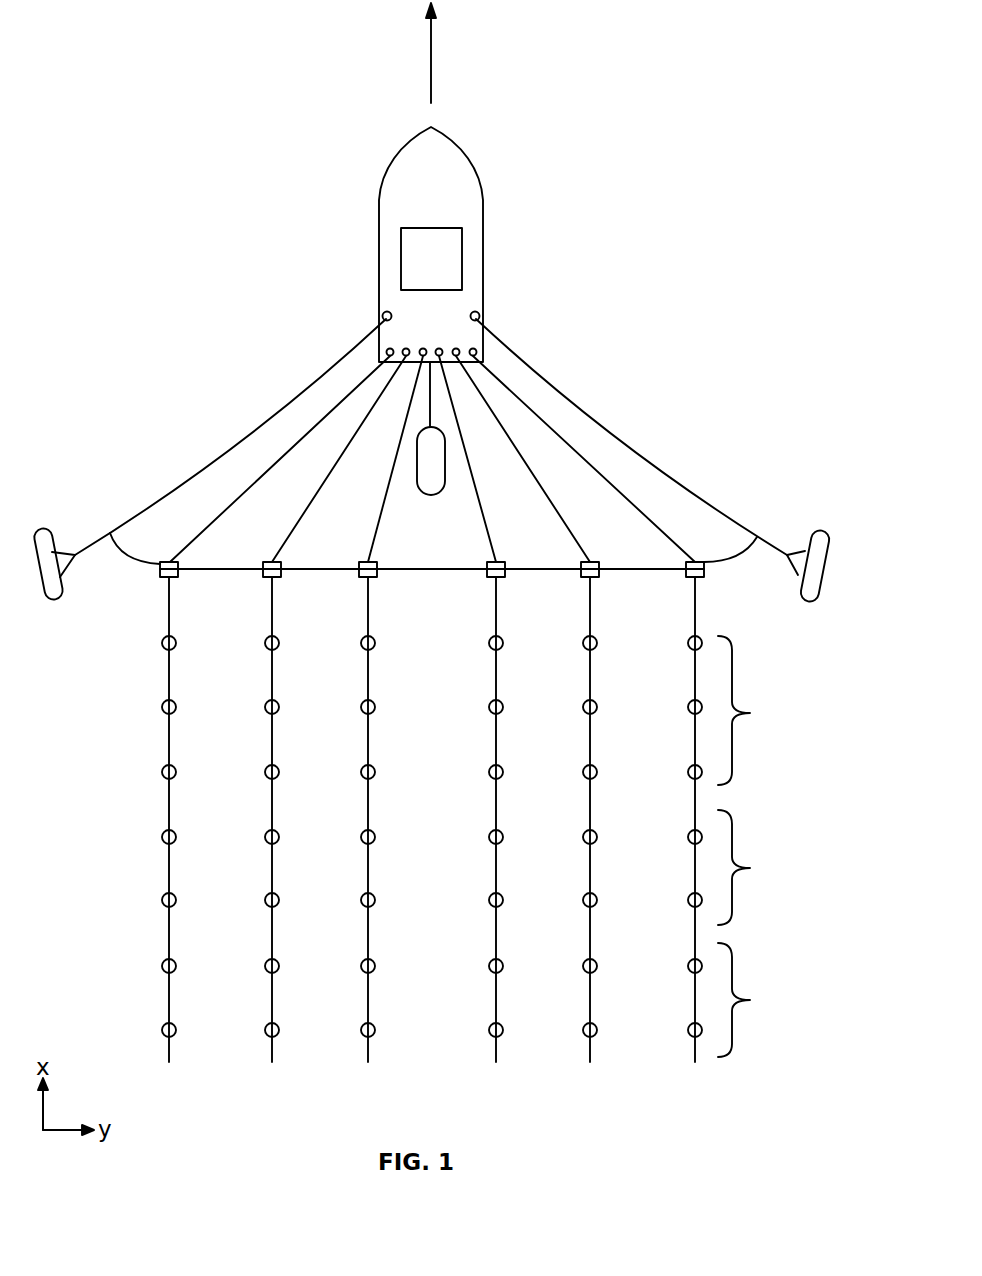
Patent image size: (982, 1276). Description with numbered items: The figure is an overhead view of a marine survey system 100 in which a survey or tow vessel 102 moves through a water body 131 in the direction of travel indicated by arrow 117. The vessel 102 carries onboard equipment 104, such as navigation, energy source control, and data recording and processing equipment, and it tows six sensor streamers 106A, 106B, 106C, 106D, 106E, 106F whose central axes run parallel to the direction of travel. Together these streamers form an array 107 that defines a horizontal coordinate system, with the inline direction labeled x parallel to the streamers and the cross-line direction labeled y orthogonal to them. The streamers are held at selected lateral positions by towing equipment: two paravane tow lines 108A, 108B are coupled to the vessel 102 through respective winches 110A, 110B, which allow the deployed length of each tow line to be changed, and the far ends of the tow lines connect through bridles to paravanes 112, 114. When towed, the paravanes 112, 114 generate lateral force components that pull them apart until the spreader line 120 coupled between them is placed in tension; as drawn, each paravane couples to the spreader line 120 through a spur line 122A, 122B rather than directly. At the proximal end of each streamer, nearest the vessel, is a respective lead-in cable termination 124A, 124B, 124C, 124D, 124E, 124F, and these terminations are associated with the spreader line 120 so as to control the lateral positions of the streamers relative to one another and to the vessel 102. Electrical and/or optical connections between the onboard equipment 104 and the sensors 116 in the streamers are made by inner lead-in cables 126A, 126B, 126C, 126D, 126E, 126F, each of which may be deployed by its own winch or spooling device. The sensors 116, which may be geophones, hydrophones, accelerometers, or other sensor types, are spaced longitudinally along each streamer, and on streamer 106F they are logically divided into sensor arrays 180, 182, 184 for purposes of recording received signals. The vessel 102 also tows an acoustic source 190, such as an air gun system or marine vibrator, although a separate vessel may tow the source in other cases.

The marine survey system 100 is at (139, 34).
The tow vessel 102 is at (379, 212).
The onboard equipment 104 is at (462, 240).
The sensor streamer 106A is at (168, 1047).
The sensor streamer 106B is at (271, 1047).
The sensor streamer 106C is at (367, 1047).
The sensor streamer 106D is at (495, 1047).
The sensor streamer 106E is at (589, 1047).
The sensor streamer 106F is at (694, 1047).
The array of sensor streamers 107 is at (777, 951).
The paravane tow line 108A is at (342, 364).
The paravane tow line 108B is at (520, 356).
The winch 110A is at (382, 316).
The winch 110B is at (480, 316).
The paravane 112 is at (55, 598).
The paravane 114 is at (821, 531).
The sensor 116 is at (162, 644).
The arrow indicating direction of travel 117 is at (432, 42).
The spreader line 120 is at (417, 567).
The spur line 122A is at (150, 566).
The spur line 122B is at (758, 539).
The lead-in cable termination 124A is at (172, 578).
The lead-in cable termination 124B is at (275, 578).
The lead-in cable termination 124C is at (371, 578).
The lead-in cable termination 124D is at (498, 578).
The lead-in cable termination 124E is at (593, 578).
The lead-in cable termination 124F is at (697, 578).
The inner lead-in cable 126A is at (328, 420).
The inner lead-in cable 126B is at (323, 495).
The inner lead-in cable 126C is at (372, 557).
The inner lead-in cable 126D is at (493, 557).
The inner lead-in cable 126E is at (545, 497).
The inner lead-in cable 126F is at (528, 410).
The water body 131 is at (752, 324).
The sensor array 180 is at (750, 1000).
The sensor array 182 is at (750, 868).
The sensor array 184 is at (750, 713).
The acoustic source 190 is at (445, 440).